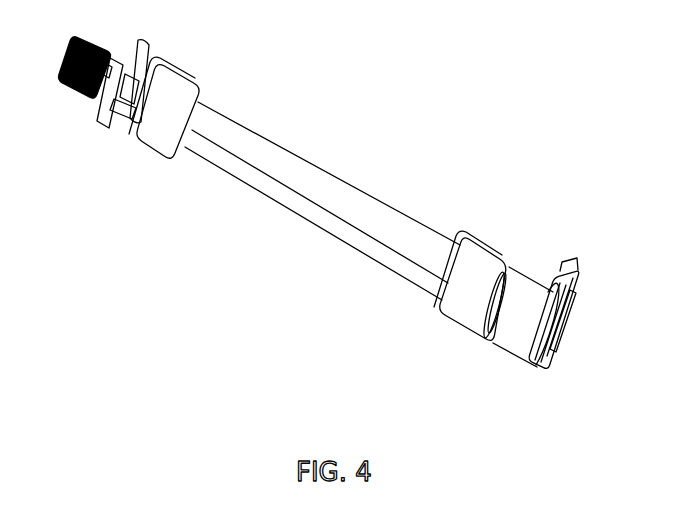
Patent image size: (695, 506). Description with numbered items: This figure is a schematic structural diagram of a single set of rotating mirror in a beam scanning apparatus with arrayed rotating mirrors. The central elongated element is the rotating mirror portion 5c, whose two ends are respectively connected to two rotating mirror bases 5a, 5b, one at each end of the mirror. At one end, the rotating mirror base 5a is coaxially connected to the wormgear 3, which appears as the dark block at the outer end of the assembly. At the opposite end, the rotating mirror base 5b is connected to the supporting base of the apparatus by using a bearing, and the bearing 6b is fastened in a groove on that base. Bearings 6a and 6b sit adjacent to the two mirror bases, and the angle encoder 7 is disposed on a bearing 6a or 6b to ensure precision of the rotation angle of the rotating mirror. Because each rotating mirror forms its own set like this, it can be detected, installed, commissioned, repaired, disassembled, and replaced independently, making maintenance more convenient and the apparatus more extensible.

The wormgear 3 is at (66, 52).
The rotating mirror base 5a is at (185, 92).
The rotating mirror base 5b is at (485, 267).
The rotating mirror portion 5c is at (283, 150).
The bearing 6a is at (133, 106).
The bearing 6b is at (489, 334).
The angle encoder 7 is at (578, 264).